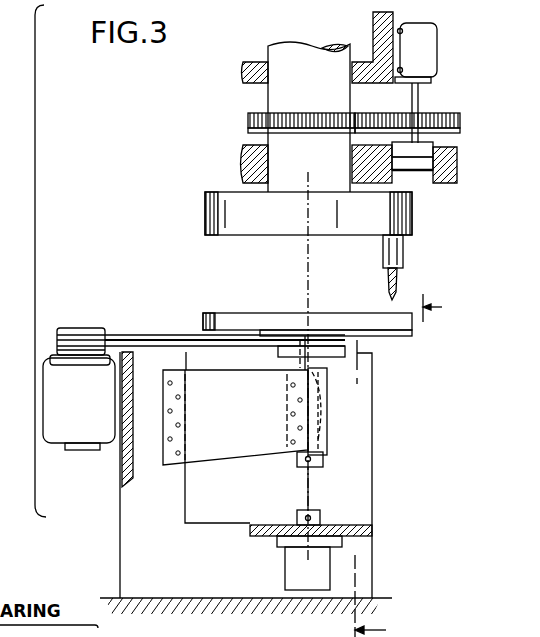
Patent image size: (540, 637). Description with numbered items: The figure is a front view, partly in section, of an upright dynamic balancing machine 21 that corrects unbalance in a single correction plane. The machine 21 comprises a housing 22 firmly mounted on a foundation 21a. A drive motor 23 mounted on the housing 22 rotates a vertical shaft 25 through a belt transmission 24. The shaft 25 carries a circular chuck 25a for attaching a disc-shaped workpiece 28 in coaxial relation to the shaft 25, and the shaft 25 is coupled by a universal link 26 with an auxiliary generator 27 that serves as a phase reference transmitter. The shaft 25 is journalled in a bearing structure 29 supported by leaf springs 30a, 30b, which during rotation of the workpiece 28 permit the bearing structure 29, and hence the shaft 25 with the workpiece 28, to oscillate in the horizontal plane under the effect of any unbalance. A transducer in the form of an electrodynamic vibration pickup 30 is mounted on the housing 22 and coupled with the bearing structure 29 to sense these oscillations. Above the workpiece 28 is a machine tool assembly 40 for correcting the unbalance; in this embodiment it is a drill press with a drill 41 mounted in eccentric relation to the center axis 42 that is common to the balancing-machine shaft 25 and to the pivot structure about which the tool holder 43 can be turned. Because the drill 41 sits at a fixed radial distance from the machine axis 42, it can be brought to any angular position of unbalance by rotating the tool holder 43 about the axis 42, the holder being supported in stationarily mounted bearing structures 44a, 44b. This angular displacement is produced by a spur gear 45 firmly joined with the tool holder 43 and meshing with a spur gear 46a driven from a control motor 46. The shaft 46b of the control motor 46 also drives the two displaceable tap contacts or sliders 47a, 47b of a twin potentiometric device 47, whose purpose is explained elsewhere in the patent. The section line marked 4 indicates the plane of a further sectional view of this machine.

The machine tool assembly 40 is at (318, 104).
The drill 41 is at (403, 268).
The center axis 42 is at (307, 264).
The tool holder 43 is at (412, 215).
The bearing structure 44a is at (243, 76).
The bearing structure 44b is at (243, 165).
The spur gear 45 is at (248, 121).
The control motor 46 is at (437, 52).
The spur gear 46a is at (420, 118).
The shaft of control motor 46b is at (433, 145).
The twin potentiometric device 47 is at (458, 172).
The tap contact 47a is at (440, 156).
The tap contact 47b is at (422, 172).
The section line 4- 4 is at (406, 465).
The workpiece 28 is at (250, 311).
The circular chuck 25a is at (365, 340).
The belt transmission 24 is at (57, 346).
The drive motor 23 is at (57, 339).
The housing 22 is at (122, 470).
The leaf spring 30a is at (235, 417).
The leaf spring 30b is at (236, 417).
The electrodynamic vibration pickup 30 is at (327, 390).
The bearing structure 29 is at (330, 435).
The vertical shaft 25 is at (323, 460).
The universal link 26 is at (312, 495).
The machine 21 is at (245, 494).
The auxiliary generator 27 is at (285, 572).
The foundation 21a is at (108, 597).